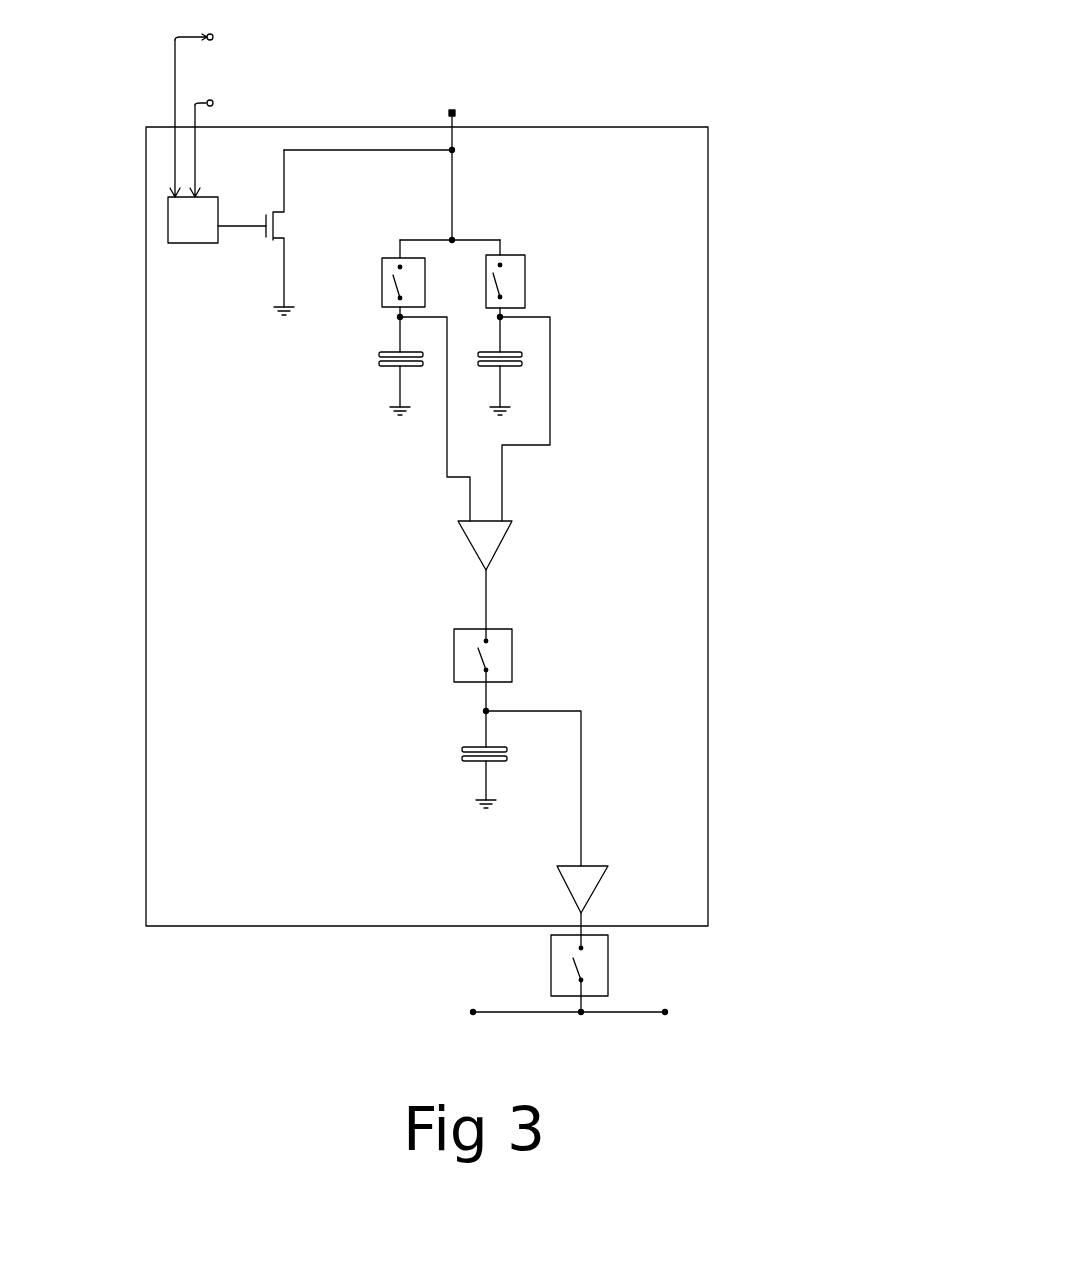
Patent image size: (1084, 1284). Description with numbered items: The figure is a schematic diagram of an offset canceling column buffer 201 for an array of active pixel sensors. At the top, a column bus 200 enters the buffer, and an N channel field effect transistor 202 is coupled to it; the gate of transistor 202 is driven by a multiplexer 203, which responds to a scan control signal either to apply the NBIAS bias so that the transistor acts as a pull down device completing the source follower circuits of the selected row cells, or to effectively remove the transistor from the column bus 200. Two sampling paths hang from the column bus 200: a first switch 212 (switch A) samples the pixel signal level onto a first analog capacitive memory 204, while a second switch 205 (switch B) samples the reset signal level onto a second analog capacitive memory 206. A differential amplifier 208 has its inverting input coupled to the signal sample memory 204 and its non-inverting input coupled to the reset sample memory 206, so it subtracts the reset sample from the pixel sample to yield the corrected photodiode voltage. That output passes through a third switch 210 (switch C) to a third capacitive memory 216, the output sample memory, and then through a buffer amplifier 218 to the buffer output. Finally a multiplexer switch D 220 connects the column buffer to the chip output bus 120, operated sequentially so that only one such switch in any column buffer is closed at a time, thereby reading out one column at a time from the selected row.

The output bus 120 is at (640, 1015).
The column bus 200 is at (455, 121).
The offset canceling column buffer 201 is at (708, 165).
The N channel field effect transistor 202 is at (272, 240).
The multiplexer 203 is at (168, 245).
The first analog capacitive memory 204 is at (380, 352).
The second switch 205 is at (527, 262).
The second analog capacitive memory 206 is at (515, 351).
The differential amplifier 208 is at (500, 548).
The third switch 210 is at (454, 661).
The first switch 212 is at (383, 258).
The third capacitive memory 216 is at (463, 748).
The buffer amplifier 218 is at (558, 884).
The multiplexer switch D 220 is at (551, 982).